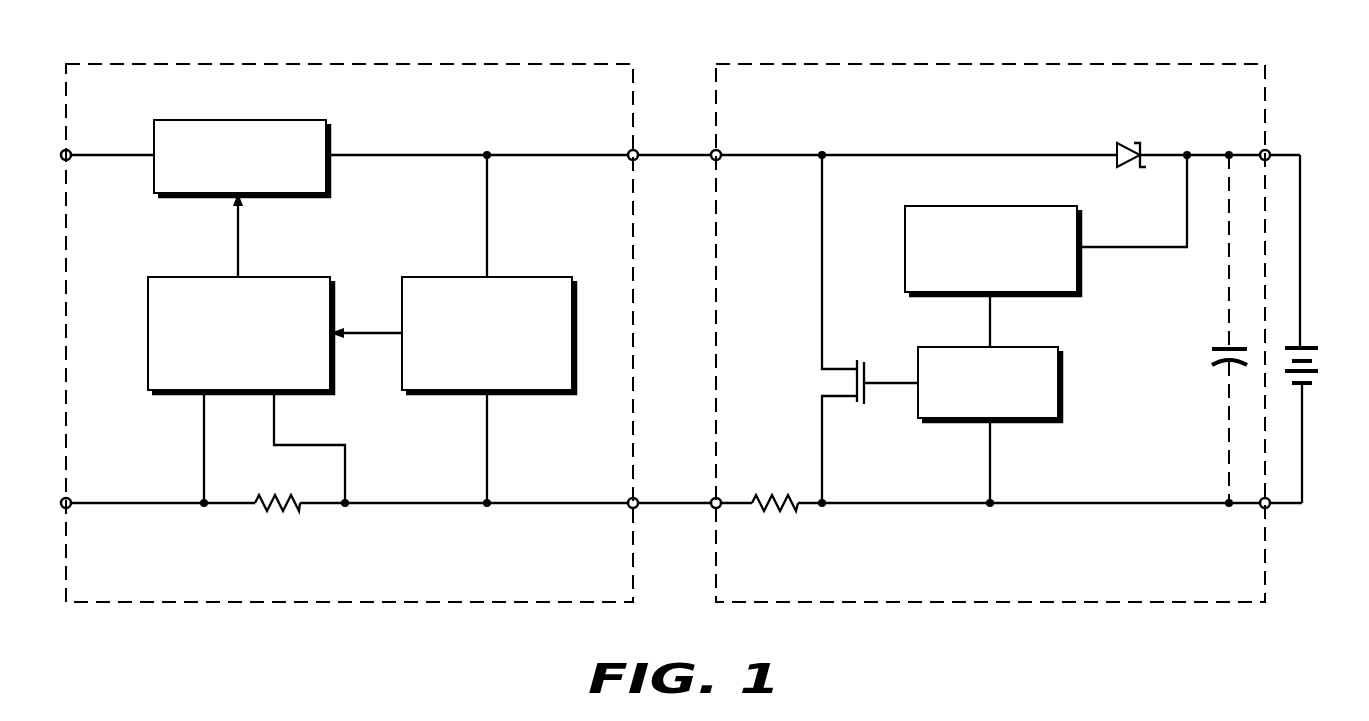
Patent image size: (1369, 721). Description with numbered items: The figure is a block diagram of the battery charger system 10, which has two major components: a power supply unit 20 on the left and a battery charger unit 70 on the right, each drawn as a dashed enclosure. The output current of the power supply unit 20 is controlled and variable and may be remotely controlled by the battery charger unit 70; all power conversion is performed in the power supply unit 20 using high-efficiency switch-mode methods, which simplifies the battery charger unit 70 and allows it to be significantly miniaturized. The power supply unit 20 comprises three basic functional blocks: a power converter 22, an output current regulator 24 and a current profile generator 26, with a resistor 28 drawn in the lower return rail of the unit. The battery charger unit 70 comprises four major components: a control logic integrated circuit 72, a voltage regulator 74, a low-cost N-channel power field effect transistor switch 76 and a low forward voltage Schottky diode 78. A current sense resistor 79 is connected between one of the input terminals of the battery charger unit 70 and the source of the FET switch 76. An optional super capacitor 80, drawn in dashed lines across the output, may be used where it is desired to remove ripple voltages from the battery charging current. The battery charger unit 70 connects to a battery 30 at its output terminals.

The battery charger system 10 is at (1016, 656).
The power supply unit 20 is at (132, 63).
The power converter 22 is at (176, 120).
The output current regulator 24 is at (175, 277).
The current profile generator 26 is at (431, 277).
The current sense resistor 28 is at (277, 495).
The battery 30 is at (1311, 393).
The battery charger unit 70 is at (740, 63).
The control logic integrated circuit 72 is at (947, 347).
The voltage regulator 74 is at (932, 206).
The N-channel power field effect transistor switch 76 is at (860, 415).
The Schottky diode 78 is at (1128, 143).
The current sense resistor 79 is at (774, 495).
The super capacitor 80 is at (1218, 346).